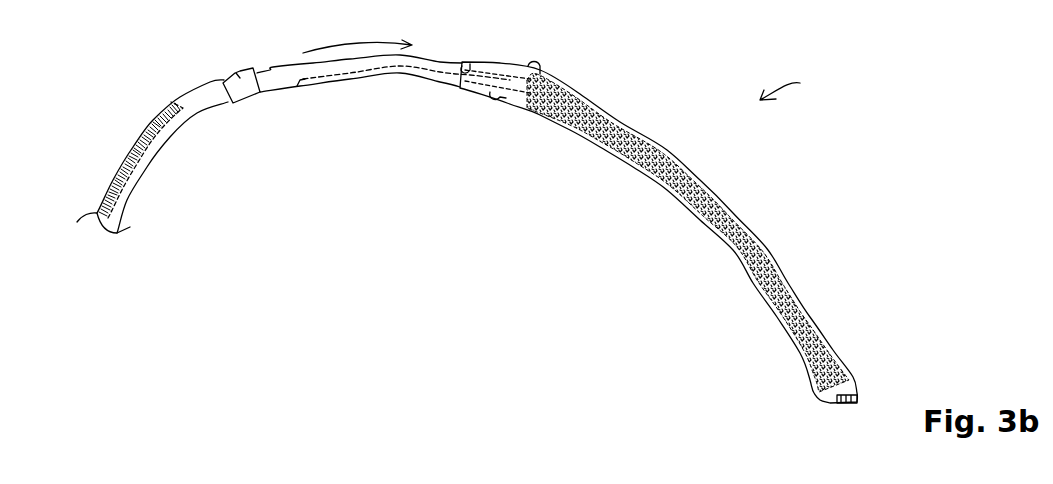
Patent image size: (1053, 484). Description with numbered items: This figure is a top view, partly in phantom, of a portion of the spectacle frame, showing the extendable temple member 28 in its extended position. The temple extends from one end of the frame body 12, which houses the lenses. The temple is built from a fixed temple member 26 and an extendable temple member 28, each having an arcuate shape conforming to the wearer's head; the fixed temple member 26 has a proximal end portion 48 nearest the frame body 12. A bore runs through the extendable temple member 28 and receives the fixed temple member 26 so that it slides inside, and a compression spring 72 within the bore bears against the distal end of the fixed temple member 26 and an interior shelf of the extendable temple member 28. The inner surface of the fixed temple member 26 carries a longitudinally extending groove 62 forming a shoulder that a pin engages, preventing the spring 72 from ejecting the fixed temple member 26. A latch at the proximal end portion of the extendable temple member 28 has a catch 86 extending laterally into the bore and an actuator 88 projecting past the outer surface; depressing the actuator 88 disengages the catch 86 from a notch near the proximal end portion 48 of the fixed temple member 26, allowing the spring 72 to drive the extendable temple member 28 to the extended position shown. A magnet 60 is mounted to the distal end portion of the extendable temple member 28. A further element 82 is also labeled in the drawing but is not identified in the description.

The frame body 12 is at (183, 100).
The fixed temple member 26 is at (273, 91).
The groove 62 is at (347, 78).
The extendable temple member 28 is at (620, 116).
The compression spring 72 is at (728, 210).
The actuator 88 is at (537, 73).
The catch 86 is at (462, 70).
The latch hook 82 is at (493, 92).
The magnet 60 is at (843, 407).
The proximal end portion 48 is at (796, 80).